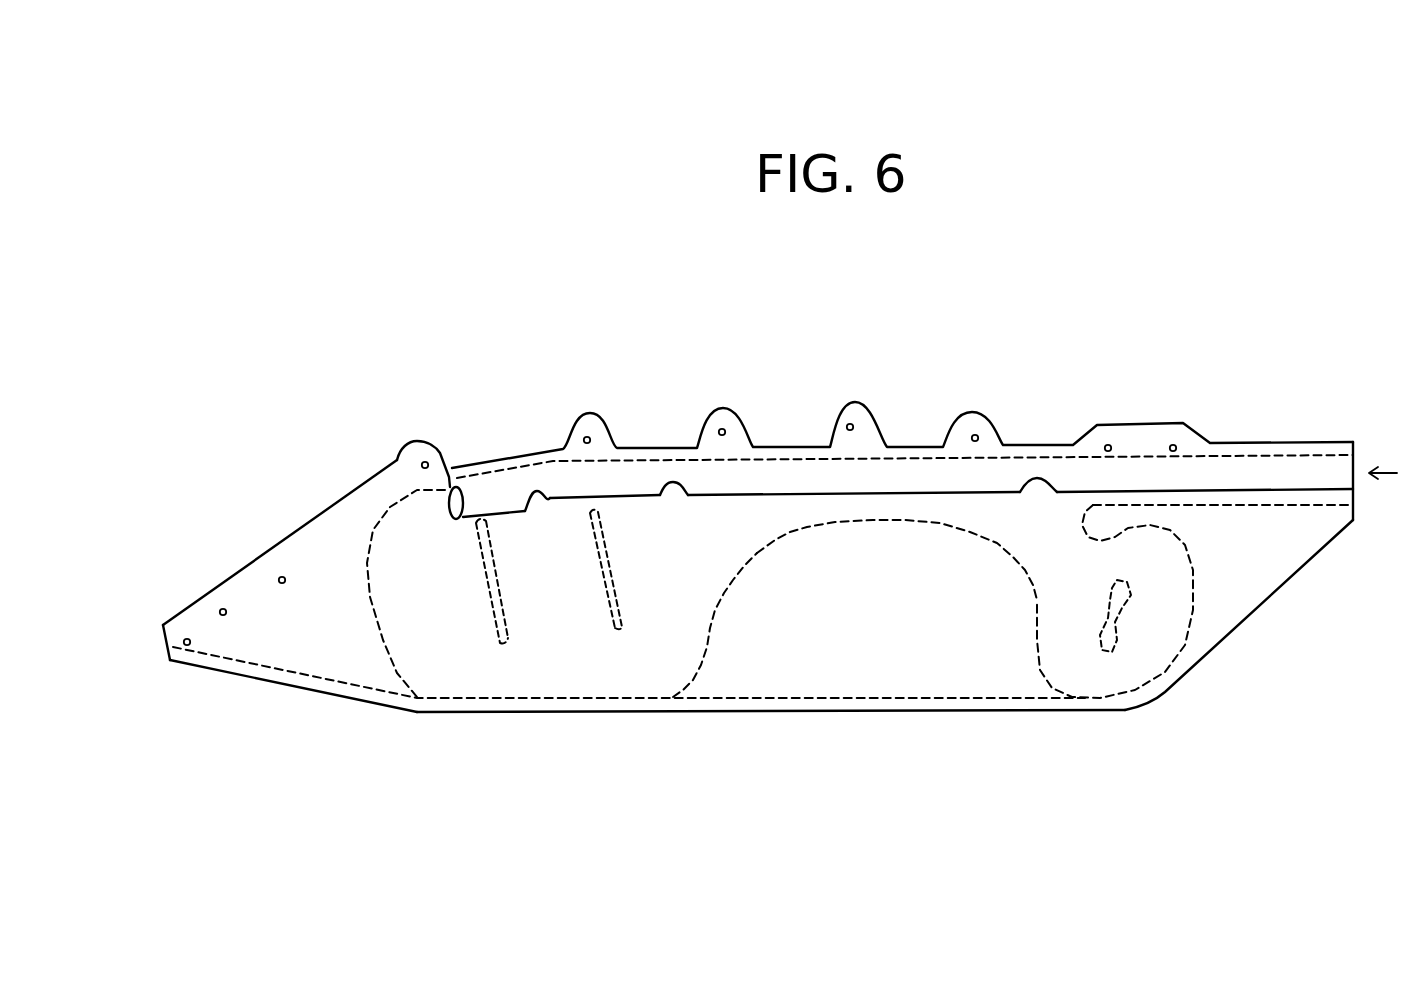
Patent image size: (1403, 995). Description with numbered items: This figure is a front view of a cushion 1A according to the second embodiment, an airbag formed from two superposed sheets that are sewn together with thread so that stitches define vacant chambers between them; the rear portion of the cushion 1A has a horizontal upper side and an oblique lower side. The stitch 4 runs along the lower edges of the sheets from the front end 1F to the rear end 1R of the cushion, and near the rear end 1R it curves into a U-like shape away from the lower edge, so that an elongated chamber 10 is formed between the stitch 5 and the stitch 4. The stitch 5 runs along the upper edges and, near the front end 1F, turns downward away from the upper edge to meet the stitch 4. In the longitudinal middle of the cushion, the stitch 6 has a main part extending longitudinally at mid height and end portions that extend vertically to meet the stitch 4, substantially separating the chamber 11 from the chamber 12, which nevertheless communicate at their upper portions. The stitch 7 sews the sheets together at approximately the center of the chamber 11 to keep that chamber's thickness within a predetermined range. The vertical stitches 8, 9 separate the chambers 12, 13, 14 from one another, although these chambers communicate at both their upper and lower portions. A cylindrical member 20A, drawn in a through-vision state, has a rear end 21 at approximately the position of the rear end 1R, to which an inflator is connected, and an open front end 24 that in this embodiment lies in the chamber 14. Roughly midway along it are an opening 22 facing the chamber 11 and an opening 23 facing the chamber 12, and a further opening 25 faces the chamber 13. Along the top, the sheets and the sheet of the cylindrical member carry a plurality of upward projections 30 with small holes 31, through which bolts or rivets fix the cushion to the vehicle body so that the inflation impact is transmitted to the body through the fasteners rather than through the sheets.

The cushion 1A is at (548, 295).
The front end 1F is at (170, 652).
The rear end 1R is at (1357, 513).
The stitch 4 is at (1247, 505).
The stitch 5 is at (388, 649).
The stitch 6 is at (760, 553).
The stitch 7 is at (1113, 597).
The stitch 8 is at (617, 603).
The stitch 9 is at (507, 630).
The chamber 10 is at (1295, 497).
The chamber 11 is at (1050, 643).
The chamber 12 is at (680, 647).
The chamber 13 is at (580, 637).
The chamber 14 is at (460, 653).
The cylindrical member 20A is at (890, 483).
The rear end 21 is at (1355, 443).
The opening 22 is at (1037, 480).
The opening 23 is at (673, 493).
The front end 24 is at (448, 507).
The opening 25 is at (537, 506).
The projections 30 is at (400, 447).
The small holes 31 is at (223, 609).